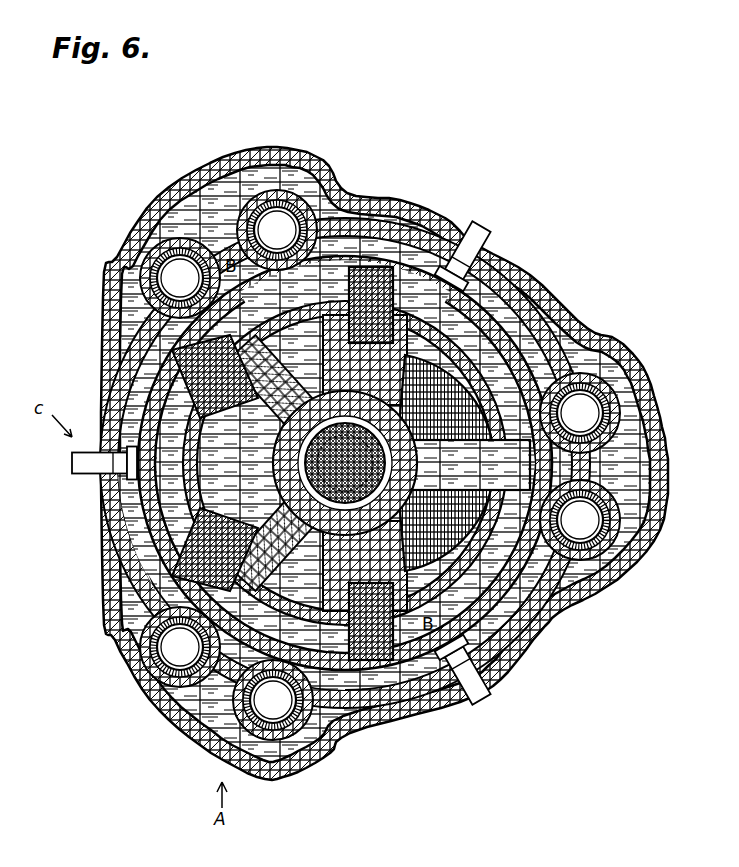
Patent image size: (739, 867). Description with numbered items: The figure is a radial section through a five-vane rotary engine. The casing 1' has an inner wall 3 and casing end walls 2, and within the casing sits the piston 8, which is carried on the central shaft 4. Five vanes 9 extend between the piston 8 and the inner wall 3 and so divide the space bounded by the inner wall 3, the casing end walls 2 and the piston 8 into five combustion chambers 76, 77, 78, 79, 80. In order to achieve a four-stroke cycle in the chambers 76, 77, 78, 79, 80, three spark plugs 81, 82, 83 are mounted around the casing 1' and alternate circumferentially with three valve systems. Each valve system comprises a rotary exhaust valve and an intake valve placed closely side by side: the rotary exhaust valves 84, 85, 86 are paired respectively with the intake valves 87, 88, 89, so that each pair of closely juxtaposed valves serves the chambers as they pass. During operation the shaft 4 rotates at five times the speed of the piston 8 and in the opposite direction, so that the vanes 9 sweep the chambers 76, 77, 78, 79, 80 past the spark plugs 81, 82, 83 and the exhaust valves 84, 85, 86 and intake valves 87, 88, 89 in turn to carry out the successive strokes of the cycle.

The casing 1' is at (373, 463).
The casing end walls 2 is at (509, 530).
The inner wall 3 is at (490, 327).
The shaft 4 is at (308, 463).
The piston 8 is at (442, 513).
The vanes 9 is at (386, 300).
The combustion chamber 76 is at (150, 540).
The combustion chamber 77 is at (272, 655).
The combustion chamber 78 is at (474, 607).
The combustion chamber 79 is at (502, 395).
The combustion chamber 80 is at (334, 290).
The spark plug 81 is at (75, 462).
The spark plug 82 is at (490, 702).
The spark plug 83 is at (479, 231).
The rotary exhaust valve 84 is at (204, 690).
The rotary exhaust valve 85 is at (618, 532).
The rotary exhaust valve 86 is at (236, 196).
The intake valve 87 is at (246, 722).
The intake valve 88 is at (650, 453).
The intake valve 89 is at (182, 243).